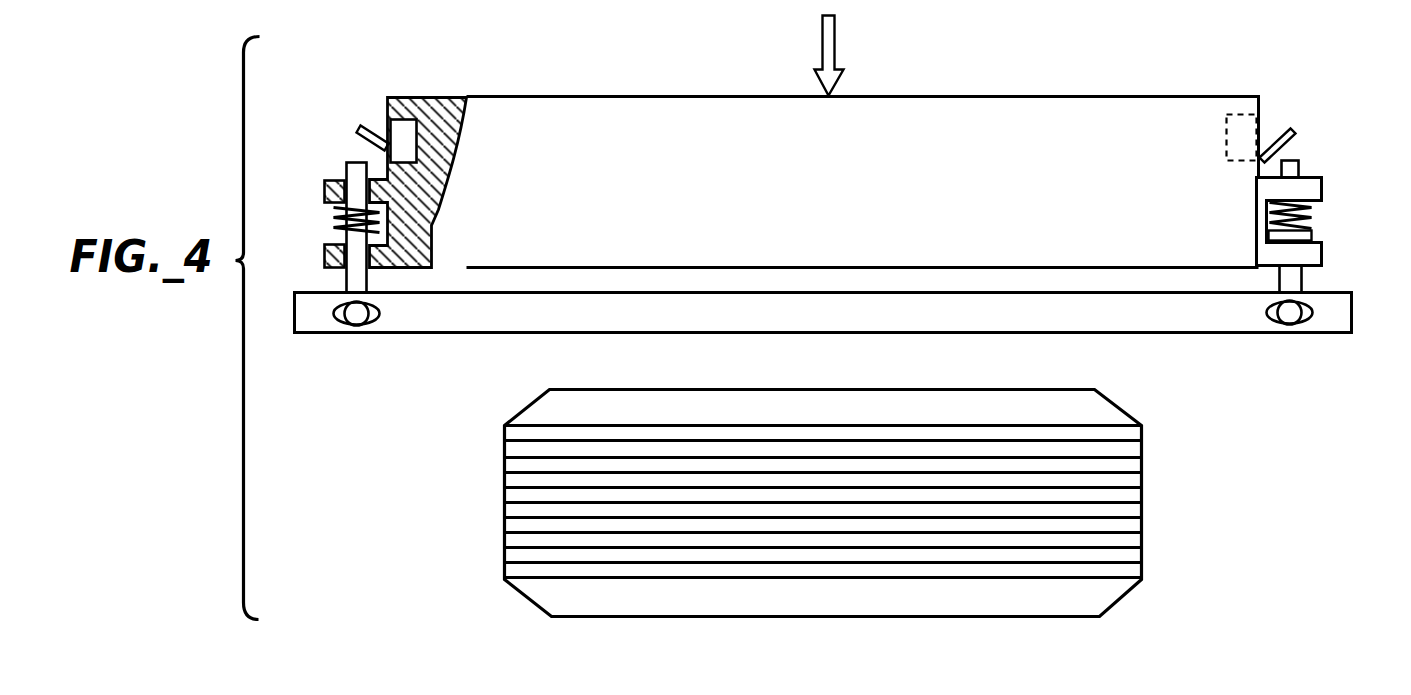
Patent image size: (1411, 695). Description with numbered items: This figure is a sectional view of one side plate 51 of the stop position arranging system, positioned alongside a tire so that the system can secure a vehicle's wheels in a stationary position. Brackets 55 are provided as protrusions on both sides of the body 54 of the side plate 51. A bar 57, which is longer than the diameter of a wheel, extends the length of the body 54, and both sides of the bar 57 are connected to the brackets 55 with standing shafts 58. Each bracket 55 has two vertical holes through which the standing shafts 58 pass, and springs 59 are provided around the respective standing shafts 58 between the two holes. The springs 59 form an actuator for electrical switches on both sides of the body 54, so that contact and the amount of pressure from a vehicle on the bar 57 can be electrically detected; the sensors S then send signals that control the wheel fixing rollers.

The side plate 51 is at (557, 82).
The body 54 is at (1130, 103).
The brackets 55 is at (325, 188).
The bar 57 is at (1157, 322).
The standing shafts 58 is at (346, 168).
The springs 59 is at (1301, 216).
The sensor S is at (386, 128).